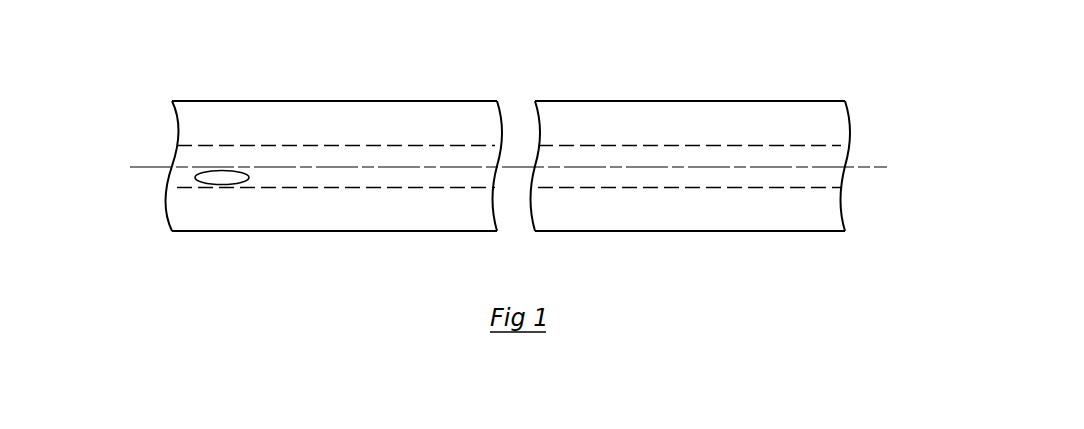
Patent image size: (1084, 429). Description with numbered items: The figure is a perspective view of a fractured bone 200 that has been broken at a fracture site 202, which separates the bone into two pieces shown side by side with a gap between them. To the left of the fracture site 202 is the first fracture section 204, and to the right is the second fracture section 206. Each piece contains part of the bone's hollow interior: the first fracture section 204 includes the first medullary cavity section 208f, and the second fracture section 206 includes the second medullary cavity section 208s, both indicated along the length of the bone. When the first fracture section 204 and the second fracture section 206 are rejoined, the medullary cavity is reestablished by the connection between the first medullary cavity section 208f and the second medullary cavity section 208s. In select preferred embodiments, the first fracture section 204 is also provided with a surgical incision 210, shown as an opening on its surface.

The fractured bone 200 is at (485, 163).
The fracture site 202 is at (534, 99).
The first fracture section 204 is at (270, 164).
The second fracture section 206 is at (731, 138).
The first medullary cavity section 208f is at (195, 158).
The second medullary cavity section 208s is at (828, 152).
The surgical incision 210 is at (235, 186).